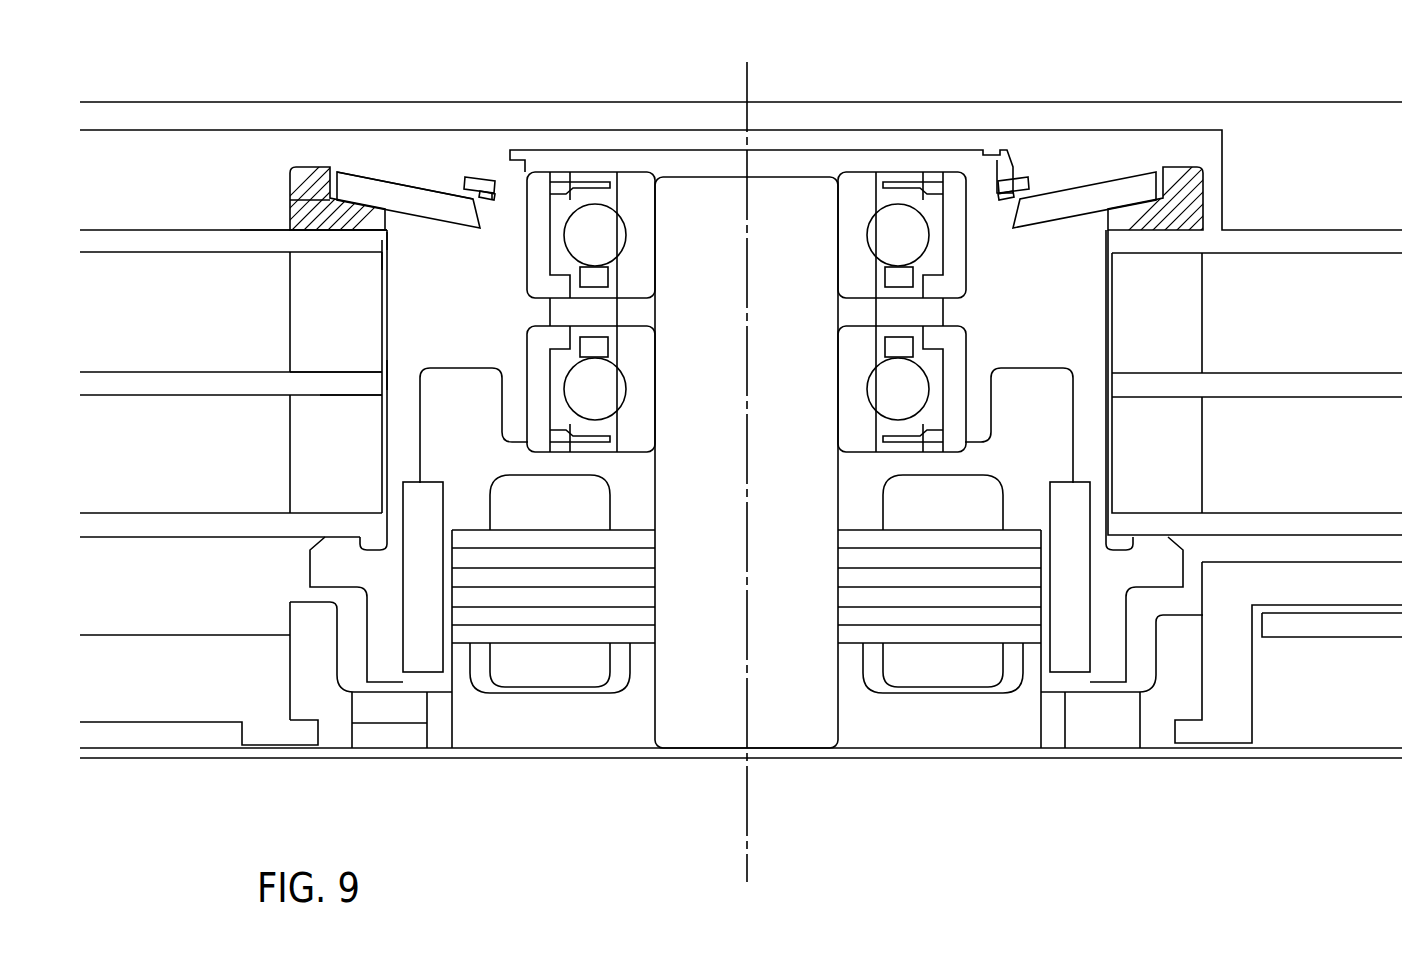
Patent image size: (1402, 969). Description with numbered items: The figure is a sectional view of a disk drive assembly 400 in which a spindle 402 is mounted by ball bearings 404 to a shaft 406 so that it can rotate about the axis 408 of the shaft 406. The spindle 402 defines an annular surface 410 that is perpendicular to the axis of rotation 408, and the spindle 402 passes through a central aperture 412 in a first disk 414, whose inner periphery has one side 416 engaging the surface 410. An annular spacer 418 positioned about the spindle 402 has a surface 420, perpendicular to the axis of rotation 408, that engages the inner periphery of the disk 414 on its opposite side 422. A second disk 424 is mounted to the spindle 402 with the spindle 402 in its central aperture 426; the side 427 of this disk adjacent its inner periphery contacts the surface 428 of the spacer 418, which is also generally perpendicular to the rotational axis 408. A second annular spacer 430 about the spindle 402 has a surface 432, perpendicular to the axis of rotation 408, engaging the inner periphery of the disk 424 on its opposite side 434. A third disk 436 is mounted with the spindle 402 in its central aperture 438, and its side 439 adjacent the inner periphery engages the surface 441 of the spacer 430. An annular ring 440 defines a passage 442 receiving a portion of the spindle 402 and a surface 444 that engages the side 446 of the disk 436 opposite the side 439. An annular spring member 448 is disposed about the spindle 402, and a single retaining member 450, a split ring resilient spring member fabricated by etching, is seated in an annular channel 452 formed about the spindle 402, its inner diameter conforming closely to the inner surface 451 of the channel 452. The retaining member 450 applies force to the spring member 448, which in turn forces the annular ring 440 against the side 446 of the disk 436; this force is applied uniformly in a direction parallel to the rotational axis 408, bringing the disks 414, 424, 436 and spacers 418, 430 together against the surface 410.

The disk drive assembly 400 is at (910, 70).
The spindle 402 is at (997, 158).
The ball bearings 404 is at (533, 353).
The shaft 406 is at (688, 382).
The axis of rotation 408 is at (749, 80).
The annular surface 410 is at (326, 530).
The central aperture 412 is at (392, 544).
The first disk 414 is at (114, 520).
The side of first disk 416 is at (347, 556).
The annular spacer 418 is at (318, 467).
The spacer surface 420 is at (302, 520).
The opposite side of first disk 422 is at (360, 512).
The second disk 424 is at (108, 383).
The central aperture 426 is at (388, 388).
The side of second disk 427 is at (318, 397).
The spacer surface 428 is at (338, 390).
The second annular spacer 430 is at (320, 324).
The spacer surface 432 is at (388, 373).
The opposite side of second disk 434 is at (306, 370).
The third disk 436 is at (108, 240).
The central aperture 438 is at (388, 239).
The side of third disk 439 is at (326, 258).
The annular ring 440 is at (305, 167).
The spacer surface 441 is at (290, 250).
The passage 442 is at (400, 207).
The ring surface 444 is at (388, 258).
The side of third disk 446 is at (316, 207).
The annular spring member 448 is at (370, 183).
The retaining member 450 is at (470, 178).
The inner surface of channel 451 is at (493, 200).
The annular channel 452 is at (490, 182).